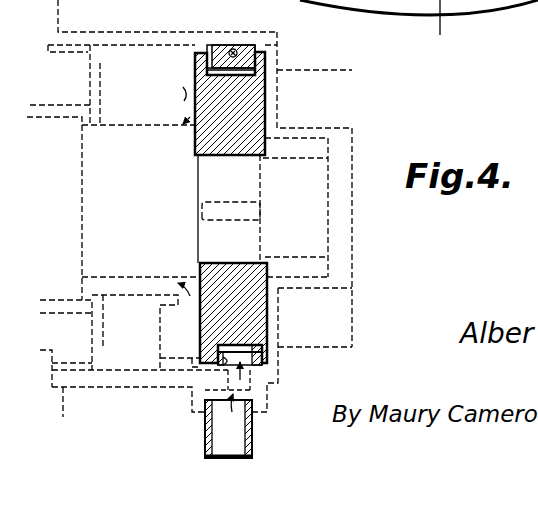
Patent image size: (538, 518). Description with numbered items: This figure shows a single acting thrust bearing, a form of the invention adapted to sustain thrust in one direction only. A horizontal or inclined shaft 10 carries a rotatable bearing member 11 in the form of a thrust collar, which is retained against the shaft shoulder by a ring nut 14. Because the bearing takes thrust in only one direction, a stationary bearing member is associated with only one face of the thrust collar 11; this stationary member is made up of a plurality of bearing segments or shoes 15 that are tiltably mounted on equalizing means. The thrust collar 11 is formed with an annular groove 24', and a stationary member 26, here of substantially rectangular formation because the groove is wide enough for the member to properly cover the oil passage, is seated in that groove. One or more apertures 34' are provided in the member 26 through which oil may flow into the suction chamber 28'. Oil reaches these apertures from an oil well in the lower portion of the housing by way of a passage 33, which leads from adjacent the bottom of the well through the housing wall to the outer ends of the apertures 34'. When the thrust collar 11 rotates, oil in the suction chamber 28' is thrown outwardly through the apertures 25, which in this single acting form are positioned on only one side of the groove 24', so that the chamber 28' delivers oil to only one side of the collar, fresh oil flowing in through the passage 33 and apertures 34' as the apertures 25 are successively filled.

The shaft 10 is at (100, 142).
The rotatable bearing member 11 is at (210, 146).
The ring nut 14 is at (320, 153).
The bearing segments or shoes 15 is at (163, 97).
The annular groove 24' is at (271, 59).
The apertures 25 is at (197, 54).
The stationary annular member 26 is at (223, 55).
The suction chamber 28' is at (255, 323).
The passage 33 is at (222, 439).
The apertures 34' is at (205, 382).